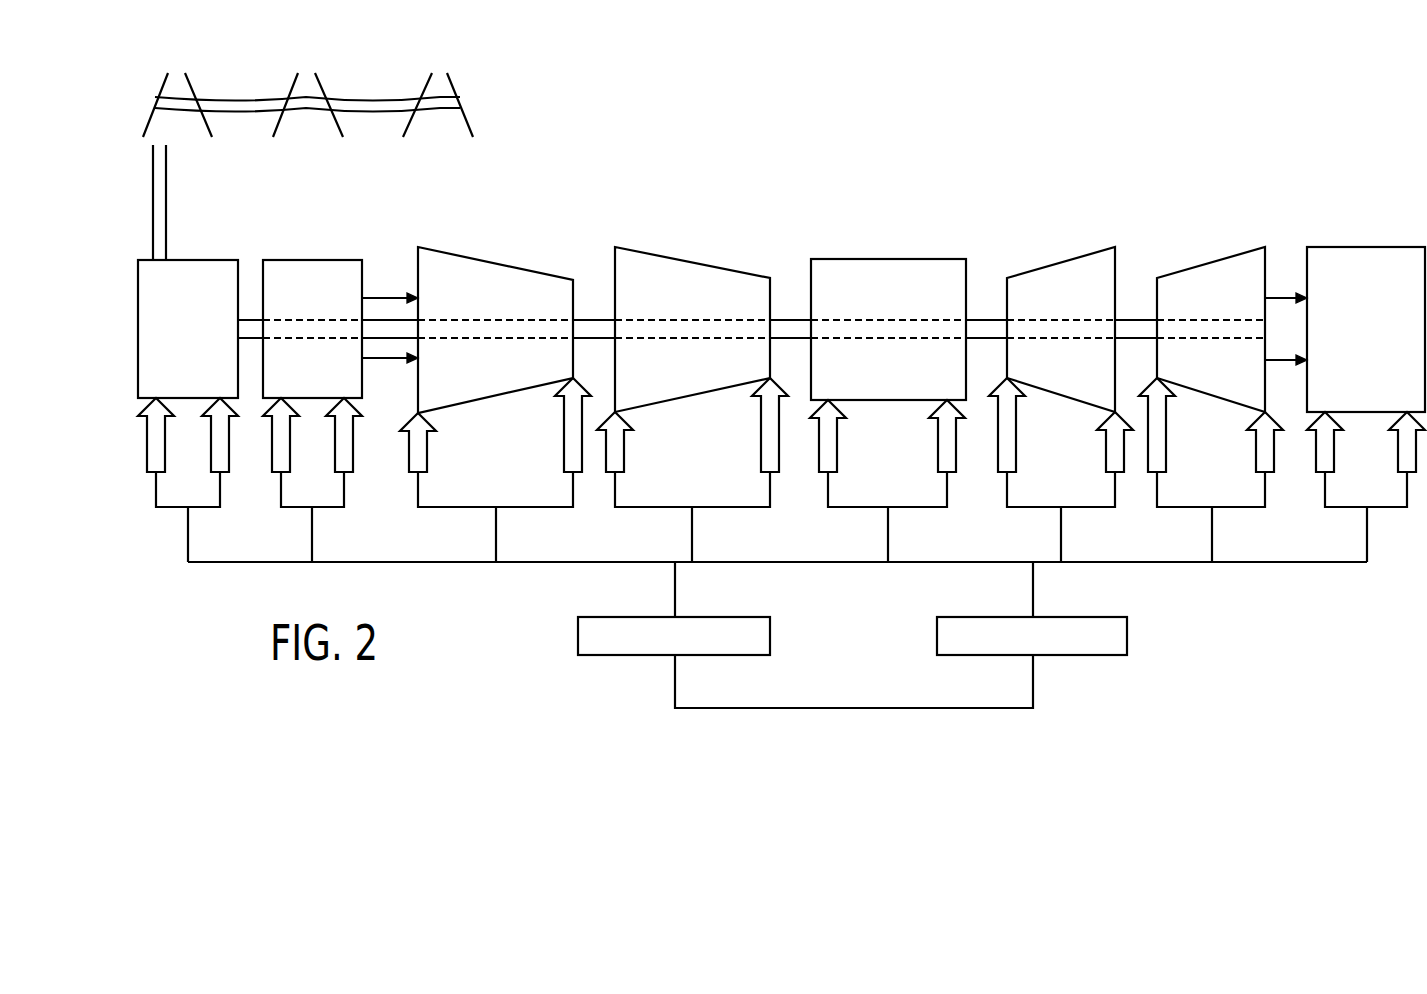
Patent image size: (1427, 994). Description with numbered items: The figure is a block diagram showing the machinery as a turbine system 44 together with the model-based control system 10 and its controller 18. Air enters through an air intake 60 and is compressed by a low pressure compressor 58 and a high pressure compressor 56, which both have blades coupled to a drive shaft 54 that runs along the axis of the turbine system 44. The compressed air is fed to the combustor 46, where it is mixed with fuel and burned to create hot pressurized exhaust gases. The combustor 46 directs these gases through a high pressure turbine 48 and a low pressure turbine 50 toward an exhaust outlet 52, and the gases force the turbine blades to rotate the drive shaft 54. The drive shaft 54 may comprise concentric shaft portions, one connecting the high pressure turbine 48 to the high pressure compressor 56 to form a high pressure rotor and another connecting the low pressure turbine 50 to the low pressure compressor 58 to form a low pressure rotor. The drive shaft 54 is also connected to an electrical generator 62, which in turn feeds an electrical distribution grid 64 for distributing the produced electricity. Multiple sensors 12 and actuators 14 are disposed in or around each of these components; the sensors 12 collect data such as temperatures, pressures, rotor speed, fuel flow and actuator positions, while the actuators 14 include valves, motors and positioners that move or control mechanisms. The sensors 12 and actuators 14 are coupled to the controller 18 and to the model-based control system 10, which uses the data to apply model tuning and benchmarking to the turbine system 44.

The model-based control system 10 is at (1127, 635).
The sensors 12 is at (165, 442).
The actuators 14 is at (229, 442).
The controller 18 is at (770, 625).
The turbine system 44 is at (968, 114).
The combustor 46 is at (890, 259).
The high pressure turbine 48 is at (1060, 262).
The low pressure turbine 50 is at (1210, 262).
The exhaust outlet 52 is at (1370, 247).
The drive shaft 54 is at (987, 318).
The high pressure compressor 56 is at (693, 262).
The low pressure compressor 58 is at (497, 264).
The air intake 60 is at (315, 259).
The electrical generator 62 is at (190, 259).
The electrical distribution grid 64 is at (476, 52).